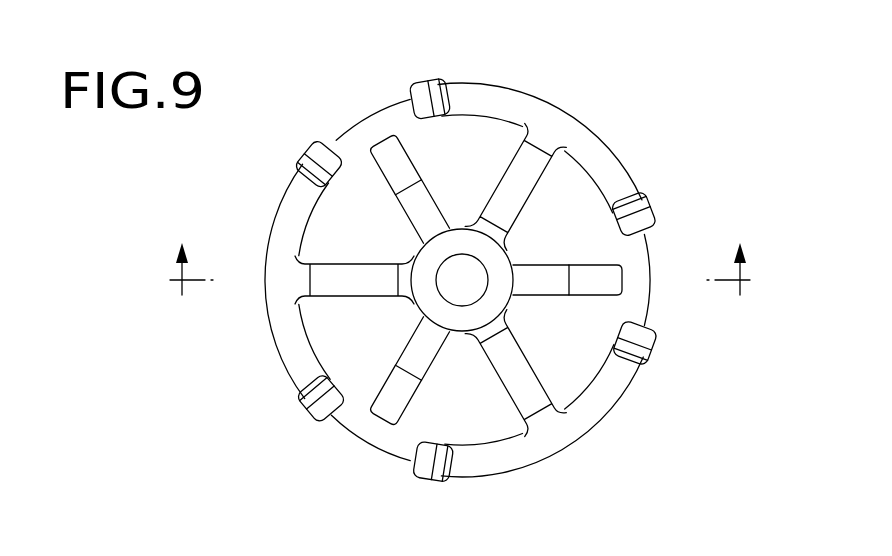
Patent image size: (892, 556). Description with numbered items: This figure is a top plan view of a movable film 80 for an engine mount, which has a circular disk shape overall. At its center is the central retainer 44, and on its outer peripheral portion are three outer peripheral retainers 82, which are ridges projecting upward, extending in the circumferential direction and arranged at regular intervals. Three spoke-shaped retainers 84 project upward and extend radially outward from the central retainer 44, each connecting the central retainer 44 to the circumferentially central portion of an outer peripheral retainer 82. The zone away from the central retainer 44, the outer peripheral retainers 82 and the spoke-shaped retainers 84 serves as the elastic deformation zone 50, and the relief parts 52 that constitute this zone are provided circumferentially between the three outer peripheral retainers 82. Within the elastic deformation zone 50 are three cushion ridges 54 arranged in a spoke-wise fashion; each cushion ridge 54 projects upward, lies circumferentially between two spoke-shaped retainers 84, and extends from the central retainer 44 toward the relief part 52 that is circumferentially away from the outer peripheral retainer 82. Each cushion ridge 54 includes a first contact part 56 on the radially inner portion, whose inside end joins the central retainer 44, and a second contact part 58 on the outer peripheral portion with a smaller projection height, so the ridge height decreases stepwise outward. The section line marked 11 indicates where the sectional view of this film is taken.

The movable film 80 is at (718, 120).
The central retainer 44 is at (494, 263).
The spoke-shaped retainer 84 is at (522, 173).
The cushion ridge 54 is at (445, 241).
The first contact part 56 is at (423, 210).
The second contact part 58 is at (456, 232).
The outer peripheral retainer 82 is at (577, 138).
The relief part 52 is at (388, 120).
The elastic deformation zone 50 is at (350, 192).
The section line 11- 11 is at (461, 299).